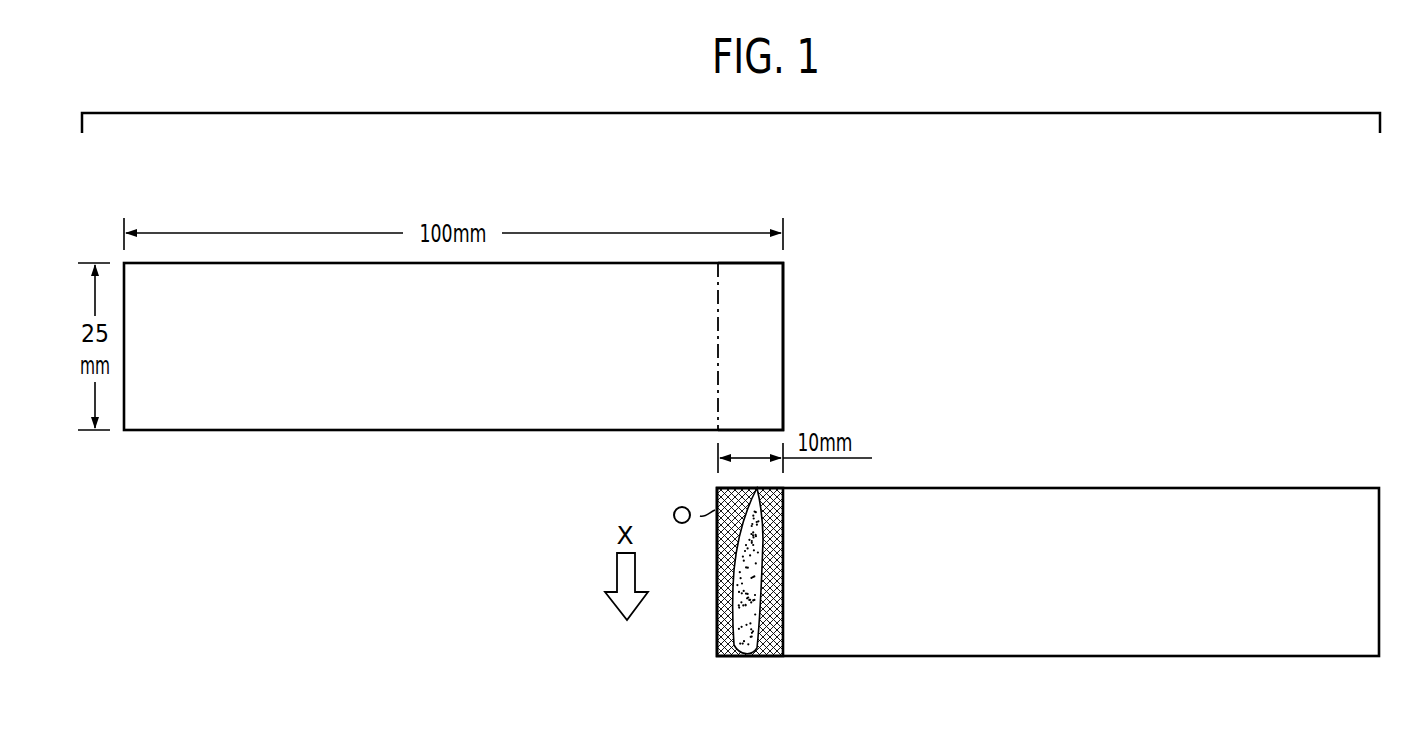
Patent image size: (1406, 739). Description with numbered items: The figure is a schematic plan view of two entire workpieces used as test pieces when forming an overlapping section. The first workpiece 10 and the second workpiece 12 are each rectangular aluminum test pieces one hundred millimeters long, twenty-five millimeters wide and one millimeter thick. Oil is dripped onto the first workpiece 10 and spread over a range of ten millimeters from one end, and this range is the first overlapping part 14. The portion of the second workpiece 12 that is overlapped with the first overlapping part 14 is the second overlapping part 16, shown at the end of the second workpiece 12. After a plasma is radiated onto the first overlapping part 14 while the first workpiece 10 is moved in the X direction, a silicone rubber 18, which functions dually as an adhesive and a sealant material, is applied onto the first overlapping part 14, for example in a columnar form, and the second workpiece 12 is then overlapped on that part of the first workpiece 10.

The first workpiece 10 is at (1003, 543).
The second workpiece 12 is at (393, 417).
The first overlapping part 14 is at (772, 657).
The second overlapping part 16 is at (767, 328).
The silicone rubber 18 is at (737, 620).